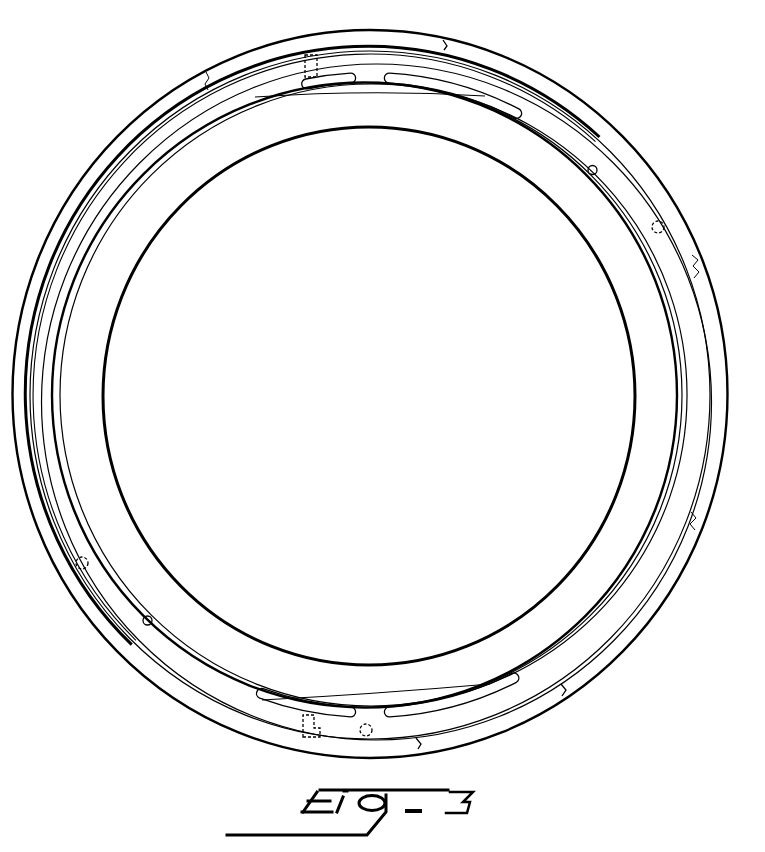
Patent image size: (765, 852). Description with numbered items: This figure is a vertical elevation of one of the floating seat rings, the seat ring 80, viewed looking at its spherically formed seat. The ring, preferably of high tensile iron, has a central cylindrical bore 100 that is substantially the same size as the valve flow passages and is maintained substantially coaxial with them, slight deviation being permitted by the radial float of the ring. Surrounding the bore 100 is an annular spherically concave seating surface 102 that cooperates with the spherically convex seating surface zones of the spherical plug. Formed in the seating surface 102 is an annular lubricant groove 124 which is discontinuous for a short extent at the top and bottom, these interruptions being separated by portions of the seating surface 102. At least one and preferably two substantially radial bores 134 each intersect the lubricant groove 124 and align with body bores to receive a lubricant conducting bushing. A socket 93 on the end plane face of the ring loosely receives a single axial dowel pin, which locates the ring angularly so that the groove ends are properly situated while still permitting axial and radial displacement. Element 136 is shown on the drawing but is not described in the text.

The seat ring 80 is at (150, 232).
The socket 93 is at (367, 722).
The bore 100 is at (217, 615).
The spherically concave seating surface 102 is at (170, 596).
The lubricant groove 124 is at (674, 449).
The radial bore 134 is at (306, 55).
The slot 136 is at (313, 82).